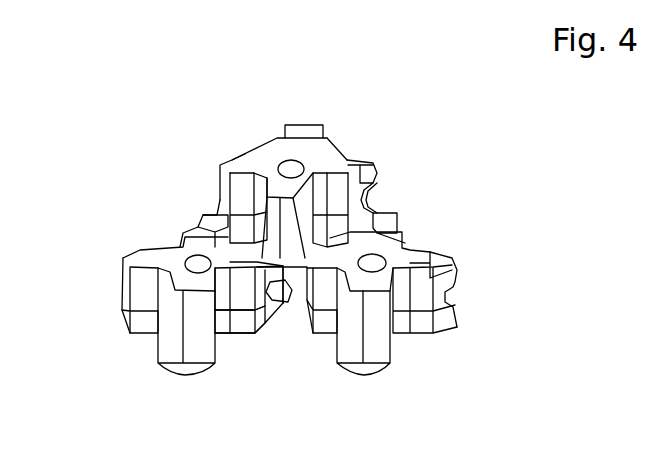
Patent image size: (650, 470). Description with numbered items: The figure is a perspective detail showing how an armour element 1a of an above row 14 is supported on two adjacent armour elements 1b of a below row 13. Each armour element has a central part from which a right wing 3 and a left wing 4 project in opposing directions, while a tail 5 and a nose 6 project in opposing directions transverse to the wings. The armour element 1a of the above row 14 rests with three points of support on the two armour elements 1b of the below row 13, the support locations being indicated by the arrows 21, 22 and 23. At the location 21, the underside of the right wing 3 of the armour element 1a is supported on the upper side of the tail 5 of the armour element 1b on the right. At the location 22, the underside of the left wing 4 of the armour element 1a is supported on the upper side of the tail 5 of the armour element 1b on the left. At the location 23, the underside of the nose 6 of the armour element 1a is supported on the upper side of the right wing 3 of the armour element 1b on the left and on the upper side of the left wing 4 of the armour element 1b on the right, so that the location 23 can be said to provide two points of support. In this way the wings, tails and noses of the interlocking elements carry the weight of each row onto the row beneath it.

The armour element of an above row 1a is at (305, 145).
The armour element of a below row 1b is at (162, 365).
The right wing 3 is at (358, 162).
The left wing 4 is at (238, 160).
The tail 5 is at (387, 223).
The nose 6 is at (267, 252).
The below row 13 is at (545, 308).
The above row 14 is at (545, 208).
The location of support (right wing on tail) 21 is at (407, 200).
The location of support (left wing on tail) 22 is at (178, 210).
The location of support (nose on wings) 23 is at (291, 292).